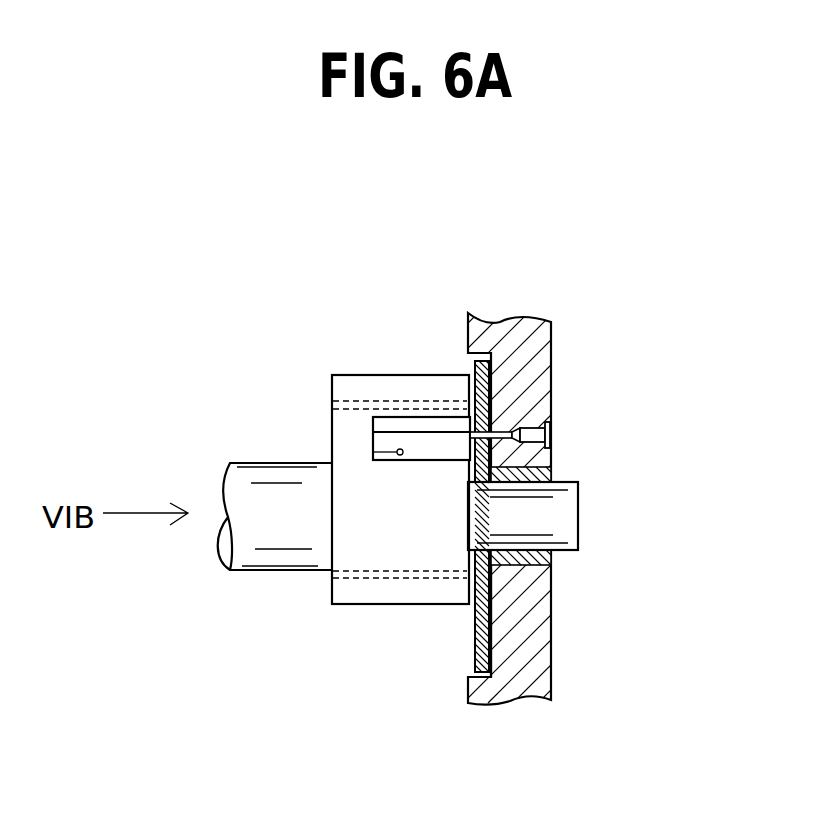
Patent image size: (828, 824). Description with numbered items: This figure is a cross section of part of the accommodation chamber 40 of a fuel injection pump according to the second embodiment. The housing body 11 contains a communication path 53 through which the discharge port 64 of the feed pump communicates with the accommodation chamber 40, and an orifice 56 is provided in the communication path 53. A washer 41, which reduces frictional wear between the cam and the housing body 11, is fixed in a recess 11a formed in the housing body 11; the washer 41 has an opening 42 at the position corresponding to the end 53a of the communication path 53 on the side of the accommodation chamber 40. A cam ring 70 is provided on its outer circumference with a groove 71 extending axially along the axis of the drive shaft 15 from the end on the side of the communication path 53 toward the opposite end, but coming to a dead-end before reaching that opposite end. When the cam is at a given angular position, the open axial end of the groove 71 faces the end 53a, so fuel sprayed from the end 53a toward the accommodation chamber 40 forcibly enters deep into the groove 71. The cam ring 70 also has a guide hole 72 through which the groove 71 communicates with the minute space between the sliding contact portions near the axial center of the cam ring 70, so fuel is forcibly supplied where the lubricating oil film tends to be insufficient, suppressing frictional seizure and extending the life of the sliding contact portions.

The housing body 11 is at (523, 330).
The recess 11a is at (493, 643).
The drive shaft 15 is at (270, 462).
The accommodation chamber 40 is at (387, 322).
The washer 41 is at (477, 662).
The opening 42 is at (470, 432).
The communication path 53 is at (533, 427).
The end of the communication path 53a is at (473, 437).
The orifice 56 is at (519, 430).
The discharge port 64 is at (551, 426).
The cam ring 70 is at (321, 354).
The groove 71 is at (373, 432).
The guide hole 72 is at (373, 452).